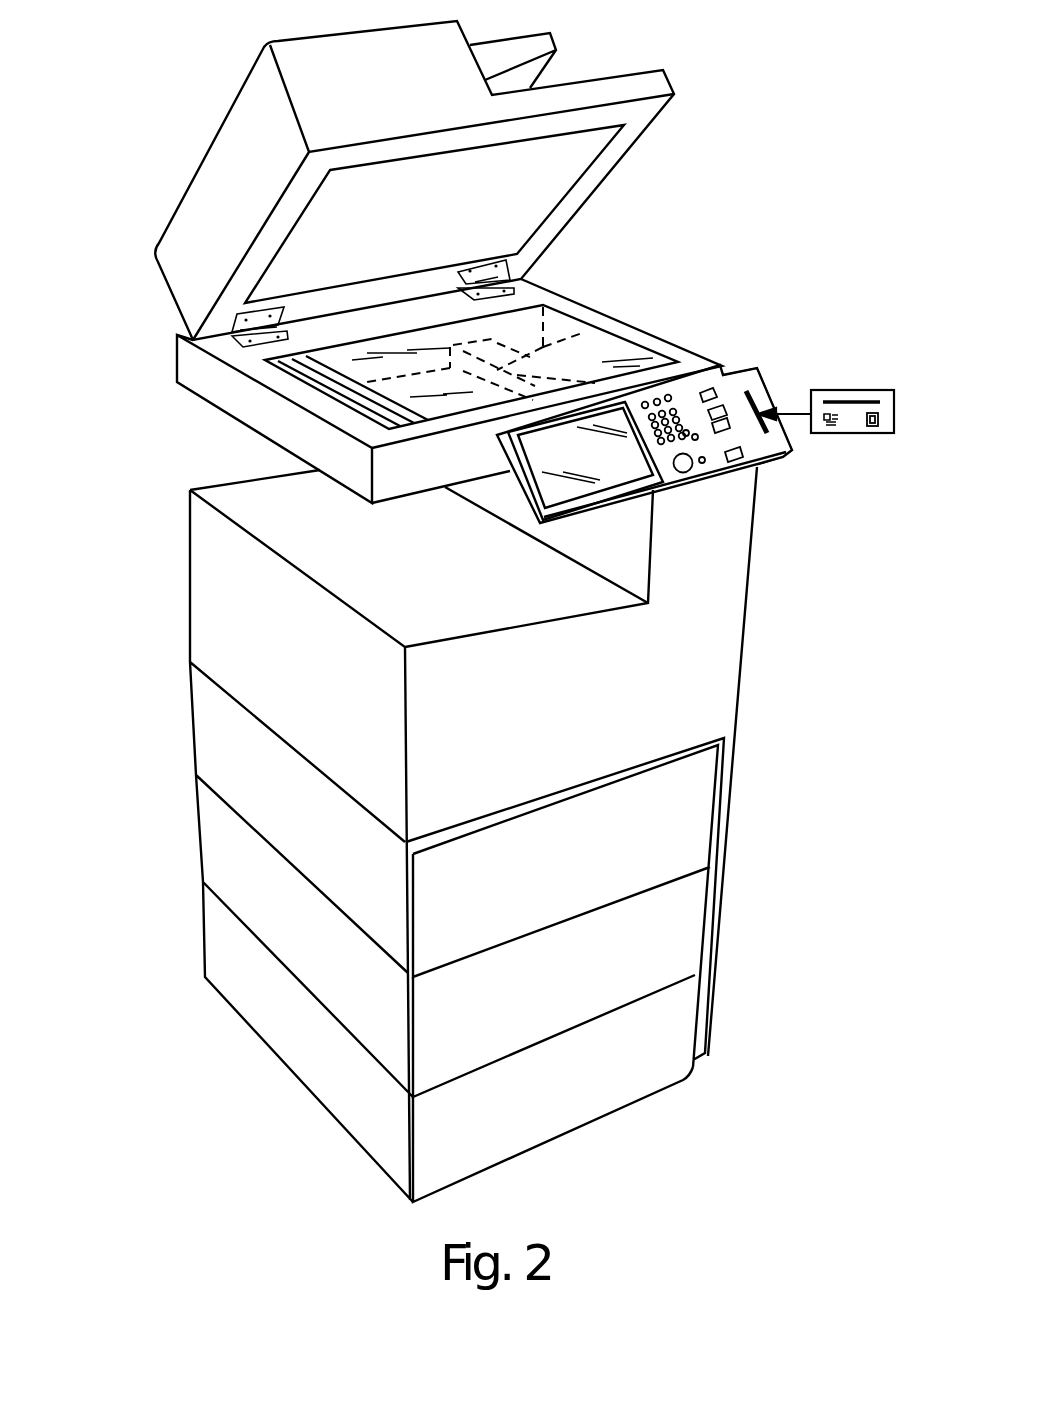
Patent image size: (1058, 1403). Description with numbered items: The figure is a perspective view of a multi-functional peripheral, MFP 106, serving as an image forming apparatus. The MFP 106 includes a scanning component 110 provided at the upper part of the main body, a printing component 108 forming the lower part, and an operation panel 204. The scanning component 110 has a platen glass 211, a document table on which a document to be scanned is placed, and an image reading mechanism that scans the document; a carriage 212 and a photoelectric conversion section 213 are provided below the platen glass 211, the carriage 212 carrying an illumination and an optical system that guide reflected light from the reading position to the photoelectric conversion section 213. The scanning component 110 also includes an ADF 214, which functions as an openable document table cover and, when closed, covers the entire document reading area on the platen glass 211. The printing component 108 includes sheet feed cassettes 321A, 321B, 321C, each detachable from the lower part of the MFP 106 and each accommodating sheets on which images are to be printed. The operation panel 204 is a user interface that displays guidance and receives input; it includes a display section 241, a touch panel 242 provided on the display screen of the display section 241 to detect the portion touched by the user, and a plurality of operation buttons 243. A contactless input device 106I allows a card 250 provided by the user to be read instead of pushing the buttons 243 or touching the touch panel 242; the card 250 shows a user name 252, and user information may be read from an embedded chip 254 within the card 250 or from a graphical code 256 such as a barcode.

The MFP 106 is at (455, 350).
The printing component 108 is at (460, 834).
The scanning component 110 is at (393, 365).
The operation panel 204 is at (756, 367).
The platen glass 211 is at (560, 325).
The carriage 212 is at (317, 388).
The photoelectric conversion section 213 is at (600, 323).
The ADF 214 is at (203, 161).
The display section 241 is at (669, 522).
The touch panel 242 is at (598, 490).
The operation buttons 243 is at (713, 470).
The card 250 is at (847, 415).
The user name 252 is at (863, 400).
The embedded chip 254 is at (875, 427).
The graphical code 256 is at (832, 427).
The contactless input device 106I is at (773, 455).
The sheet feed cassette 321A is at (716, 805).
The sheet feed cassette 321B is at (708, 919).
The sheet feed cassette 321C is at (700, 1013).